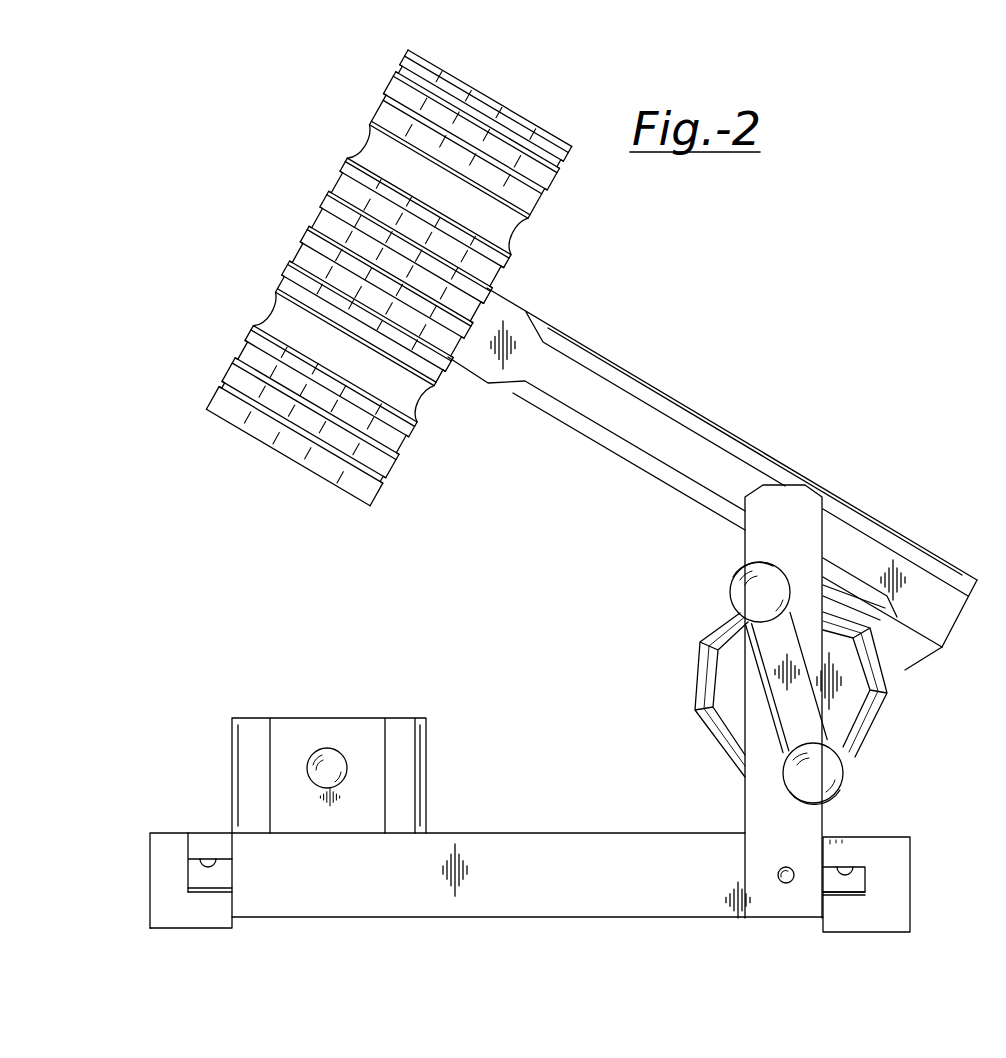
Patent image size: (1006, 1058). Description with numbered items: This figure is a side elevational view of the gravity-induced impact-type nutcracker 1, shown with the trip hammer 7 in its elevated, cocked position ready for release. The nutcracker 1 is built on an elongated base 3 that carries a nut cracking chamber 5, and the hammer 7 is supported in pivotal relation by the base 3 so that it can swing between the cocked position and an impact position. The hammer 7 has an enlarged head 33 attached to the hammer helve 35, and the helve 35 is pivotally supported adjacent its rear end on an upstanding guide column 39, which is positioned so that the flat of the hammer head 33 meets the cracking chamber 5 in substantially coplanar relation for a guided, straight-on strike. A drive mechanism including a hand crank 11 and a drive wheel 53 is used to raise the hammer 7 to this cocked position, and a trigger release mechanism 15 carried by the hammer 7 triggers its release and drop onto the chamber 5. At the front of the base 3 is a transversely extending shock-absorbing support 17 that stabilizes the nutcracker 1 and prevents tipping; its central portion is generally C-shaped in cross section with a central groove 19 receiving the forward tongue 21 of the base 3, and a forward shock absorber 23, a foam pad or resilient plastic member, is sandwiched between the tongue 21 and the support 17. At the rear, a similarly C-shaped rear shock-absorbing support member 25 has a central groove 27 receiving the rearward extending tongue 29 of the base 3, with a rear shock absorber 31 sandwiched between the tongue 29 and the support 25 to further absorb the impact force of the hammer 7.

The nutcracker 1 is at (983, 289).
The base 3 is at (500, 843).
The nut cracking chamber 5 is at (427, 773).
The trip hammer 7 is at (660, 377).
The hand crank 11 is at (770, 712).
The trigger release mechanism 15 is at (905, 657).
The front shock-absorbing support 17 is at (150, 842).
The central groove 19 is at (200, 860).
The forward tongue 21 is at (197, 871).
The forward shock absorber 23 is at (200, 893).
The rear shock-absorbing support member 25 is at (912, 845).
The central groove 27 is at (850, 870).
The rearward extending tongue 29 is at (860, 880).
The rear shock absorber 31 is at (860, 895).
The hammer head 33 is at (505, 94).
The hammer helve 35 is at (908, 532).
The guide column 39 is at (753, 530).
The drive wheel 53 is at (870, 738).